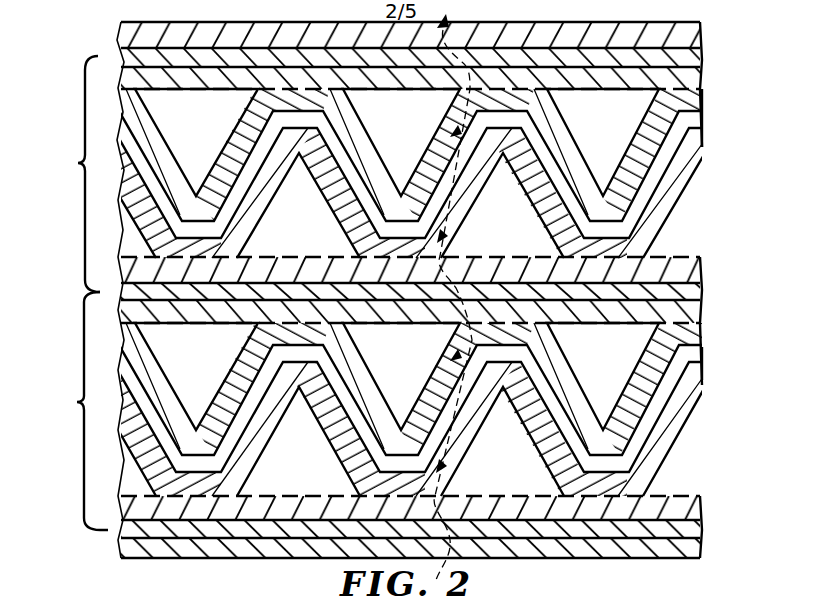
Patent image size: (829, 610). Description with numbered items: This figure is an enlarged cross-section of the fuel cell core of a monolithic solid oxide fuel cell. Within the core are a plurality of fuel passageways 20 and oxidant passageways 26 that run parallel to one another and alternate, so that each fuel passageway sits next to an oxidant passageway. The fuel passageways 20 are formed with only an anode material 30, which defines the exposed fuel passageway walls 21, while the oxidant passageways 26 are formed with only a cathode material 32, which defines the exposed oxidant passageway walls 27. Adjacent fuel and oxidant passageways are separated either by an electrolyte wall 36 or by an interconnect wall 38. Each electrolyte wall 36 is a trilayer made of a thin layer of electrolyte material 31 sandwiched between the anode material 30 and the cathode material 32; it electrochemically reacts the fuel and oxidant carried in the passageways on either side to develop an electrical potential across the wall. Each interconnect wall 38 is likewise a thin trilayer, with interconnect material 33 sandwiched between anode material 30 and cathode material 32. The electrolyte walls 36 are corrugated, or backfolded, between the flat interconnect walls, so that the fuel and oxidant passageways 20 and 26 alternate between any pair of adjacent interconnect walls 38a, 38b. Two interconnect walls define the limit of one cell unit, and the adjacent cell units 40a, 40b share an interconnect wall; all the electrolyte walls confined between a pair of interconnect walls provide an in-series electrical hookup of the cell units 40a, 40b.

The fuel passageway 20 is at (183, 134).
The fuel passageway wall 21 is at (433, 355).
The oxidant passageway 26 is at (284, 231).
The oxidant passageway wall 27 is at (312, 496).
The anode material 30 is at (700, 72).
The electrolyte material 31 is at (700, 357).
The cathode material 32 is at (700, 35).
The interconnect material 33 is at (700, 52).
The electrolyte wall 36 is at (714, 96).
The interconnect wall 38 is at (722, 268).
The interconnect wall 38a is at (110, 277).
The interconnect wall 38b is at (108, 46).
The cell unit 40a is at (66, 174).
The cell unit 40b is at (68, 411).